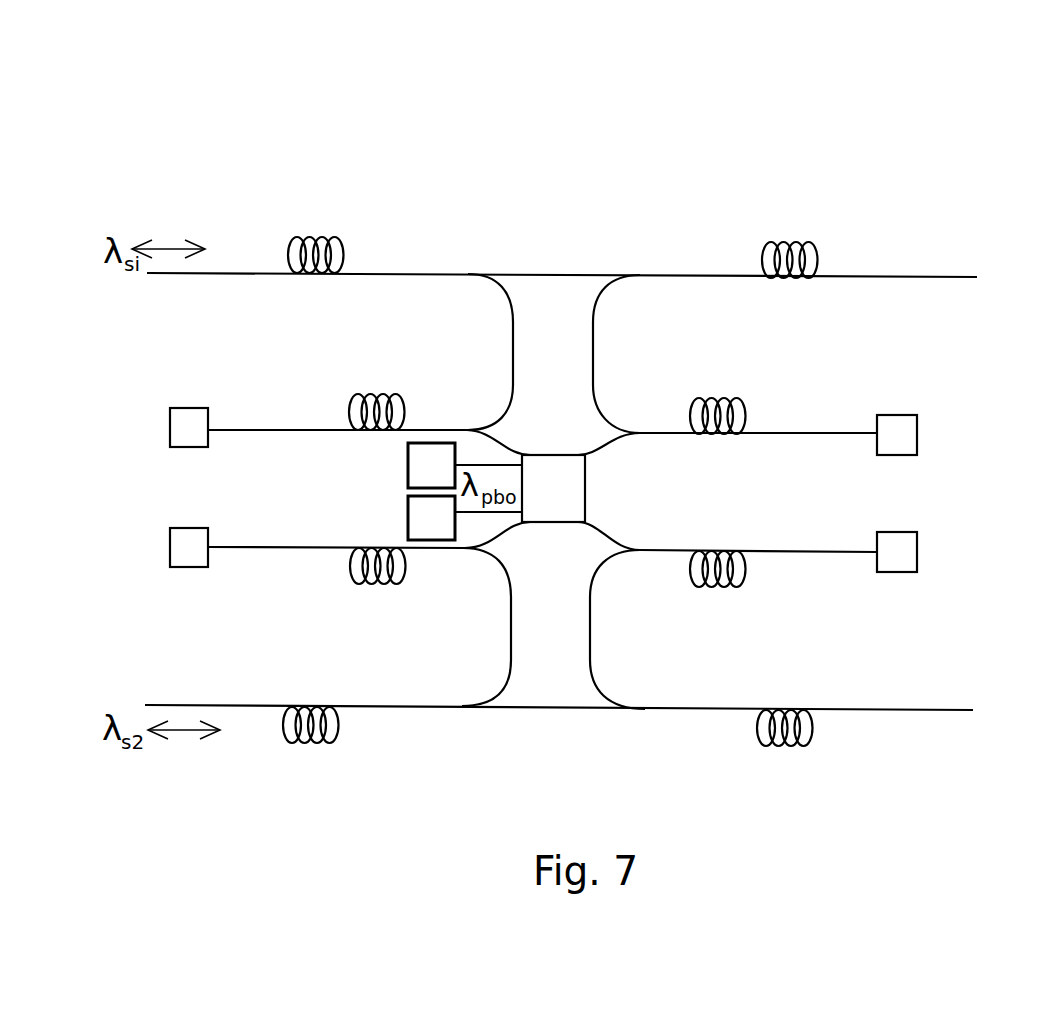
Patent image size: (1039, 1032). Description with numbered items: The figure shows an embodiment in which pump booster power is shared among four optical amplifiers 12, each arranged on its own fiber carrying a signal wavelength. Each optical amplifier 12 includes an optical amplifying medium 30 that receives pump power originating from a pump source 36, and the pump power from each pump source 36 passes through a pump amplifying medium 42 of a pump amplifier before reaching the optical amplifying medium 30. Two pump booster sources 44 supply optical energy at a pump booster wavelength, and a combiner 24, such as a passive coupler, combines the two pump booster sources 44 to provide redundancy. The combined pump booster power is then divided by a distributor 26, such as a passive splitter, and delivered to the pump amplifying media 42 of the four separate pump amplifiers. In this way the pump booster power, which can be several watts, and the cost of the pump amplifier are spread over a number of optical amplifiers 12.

The optical amplifier 12 is at (205, 123).
The combiner 24 is at (554, 450).
The distributor 26 is at (555, 442).
The optical amplifying medium 30 is at (318, 237).
The pump source 36 is at (170, 423).
The pump amplifying medium 42 is at (360, 395).
The pump booster source 44 is at (407, 458).